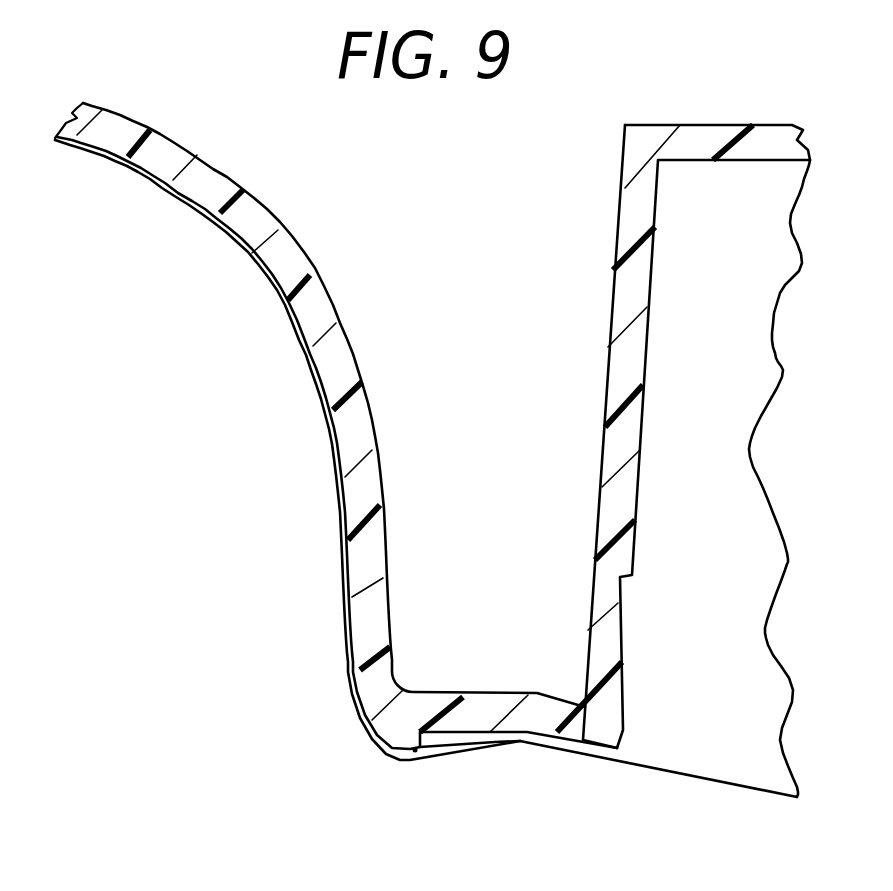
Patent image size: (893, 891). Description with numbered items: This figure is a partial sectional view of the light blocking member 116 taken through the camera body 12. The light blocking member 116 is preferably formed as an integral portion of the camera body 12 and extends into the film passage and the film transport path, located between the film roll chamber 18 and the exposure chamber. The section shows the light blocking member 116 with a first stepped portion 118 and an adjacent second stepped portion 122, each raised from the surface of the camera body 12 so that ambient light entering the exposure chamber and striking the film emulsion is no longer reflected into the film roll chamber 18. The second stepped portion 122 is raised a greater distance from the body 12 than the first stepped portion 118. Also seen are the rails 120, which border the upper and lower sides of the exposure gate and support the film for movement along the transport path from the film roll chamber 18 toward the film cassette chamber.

The film roll chamber 18 is at (190, 372).
The camera body 12 is at (367, 630).
The light blocking member 116 is at (377, 732).
The first stepped portion 118 is at (387, 752).
The second stepped portion 122 is at (407, 761).
The rails 120 is at (600, 767).